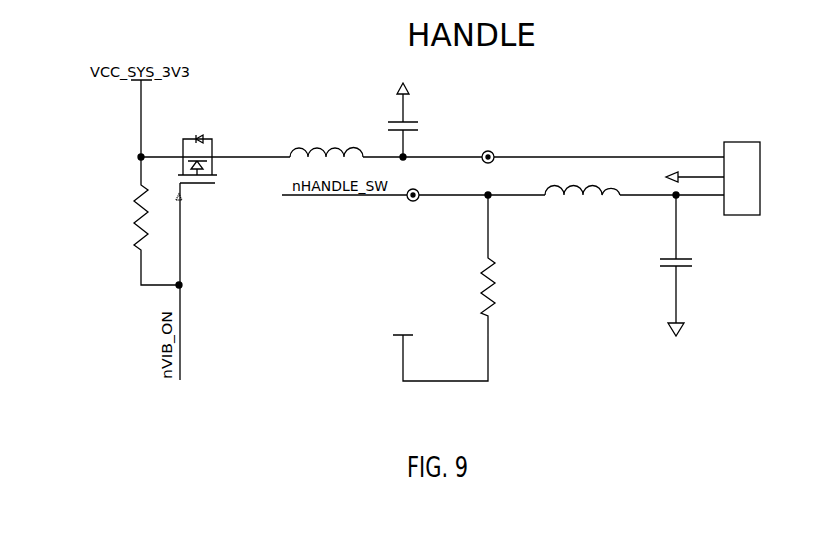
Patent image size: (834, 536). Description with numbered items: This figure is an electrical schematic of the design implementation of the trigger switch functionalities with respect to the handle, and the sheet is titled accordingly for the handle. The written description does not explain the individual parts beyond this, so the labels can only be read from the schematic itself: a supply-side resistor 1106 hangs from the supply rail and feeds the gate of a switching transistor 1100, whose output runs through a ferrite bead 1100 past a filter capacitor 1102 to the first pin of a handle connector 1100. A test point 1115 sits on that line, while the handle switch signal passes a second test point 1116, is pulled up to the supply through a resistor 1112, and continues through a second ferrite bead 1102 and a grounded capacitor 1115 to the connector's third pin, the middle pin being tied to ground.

The resistor R1106 10K 0402 1106 is at (133, 221).
The transistor Q1100 / ferrite bead FB1100 / connector CN1100 1100 is at (504, 249).
The capacitor C1102 / ferrite bead FB1102 1102 is at (526, 150).
The test point TP1115 / capacitor C1115 1115 is at (594, 246).
The test point TP1116 1116 is at (420, 206).
The resistor R1112 10K 0402 1112 is at (423, 288).